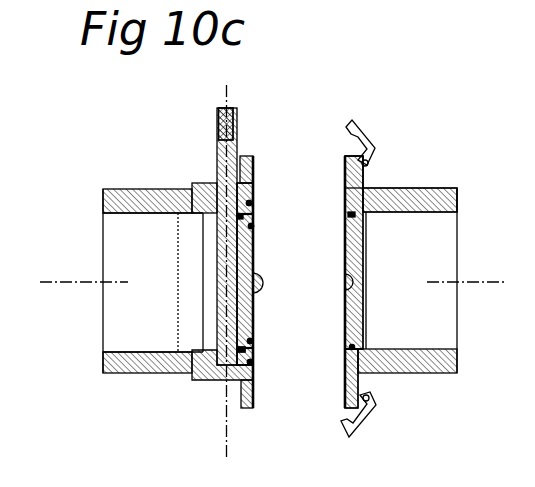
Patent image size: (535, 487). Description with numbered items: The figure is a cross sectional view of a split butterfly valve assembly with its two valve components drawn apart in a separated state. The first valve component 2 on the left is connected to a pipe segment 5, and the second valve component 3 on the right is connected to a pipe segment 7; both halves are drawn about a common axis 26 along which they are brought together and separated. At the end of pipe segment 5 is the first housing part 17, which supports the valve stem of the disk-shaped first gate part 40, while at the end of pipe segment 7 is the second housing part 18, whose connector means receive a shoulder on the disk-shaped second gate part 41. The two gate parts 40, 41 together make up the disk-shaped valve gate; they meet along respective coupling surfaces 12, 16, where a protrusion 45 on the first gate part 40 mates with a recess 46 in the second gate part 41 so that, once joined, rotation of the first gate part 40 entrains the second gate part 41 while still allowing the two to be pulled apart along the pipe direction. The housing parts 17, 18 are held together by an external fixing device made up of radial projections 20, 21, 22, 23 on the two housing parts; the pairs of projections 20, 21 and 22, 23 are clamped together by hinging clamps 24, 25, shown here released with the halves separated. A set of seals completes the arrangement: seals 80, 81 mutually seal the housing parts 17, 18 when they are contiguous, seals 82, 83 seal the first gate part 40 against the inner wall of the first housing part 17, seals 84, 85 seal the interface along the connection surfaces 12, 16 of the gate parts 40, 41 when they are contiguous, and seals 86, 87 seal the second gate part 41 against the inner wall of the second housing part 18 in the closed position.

The first valve component 2 is at (205, 257).
The second valve component 3 is at (410, 256).
The pipe segment 5 is at (118, 373).
The pipe segment 7 is at (457, 374).
The coupling surface 12 is at (254, 303).
The coupling surface 16 is at (345, 322).
The first housing part 17 is at (201, 181).
The second housing part 18 is at (372, 196).
The radial projection 20 is at (253, 160).
The radial projection 21 is at (345, 182).
The radial projection 22 is at (253, 405).
The radial projection 23 is at (345, 390).
The hinging clamp 24 is at (374, 147).
The hinging clamp 25 is at (372, 420).
The axis 26 is at (76, 282).
The first gate part 40 is at (254, 248).
The second gate part 41 is at (364, 250).
The protrusion 45 is at (262, 280).
The recess 46 is at (355, 282).
The seal 80 is at (253, 196).
The seal 81 is at (252, 364).
The seal 82 is at (251, 203).
The seal 83 is at (253, 346).
The seal 84 is at (253, 226).
The seal 85 is at (252, 340).
The seal 86 is at (355, 214).
The seal 87 is at (354, 347).